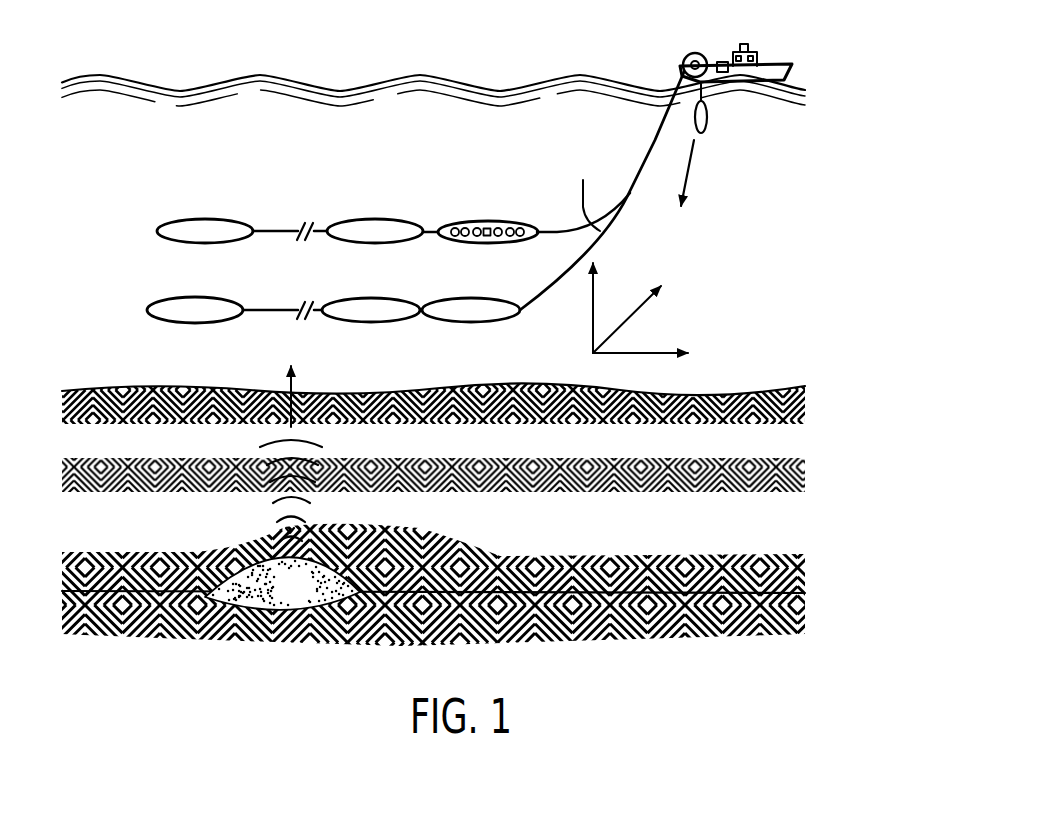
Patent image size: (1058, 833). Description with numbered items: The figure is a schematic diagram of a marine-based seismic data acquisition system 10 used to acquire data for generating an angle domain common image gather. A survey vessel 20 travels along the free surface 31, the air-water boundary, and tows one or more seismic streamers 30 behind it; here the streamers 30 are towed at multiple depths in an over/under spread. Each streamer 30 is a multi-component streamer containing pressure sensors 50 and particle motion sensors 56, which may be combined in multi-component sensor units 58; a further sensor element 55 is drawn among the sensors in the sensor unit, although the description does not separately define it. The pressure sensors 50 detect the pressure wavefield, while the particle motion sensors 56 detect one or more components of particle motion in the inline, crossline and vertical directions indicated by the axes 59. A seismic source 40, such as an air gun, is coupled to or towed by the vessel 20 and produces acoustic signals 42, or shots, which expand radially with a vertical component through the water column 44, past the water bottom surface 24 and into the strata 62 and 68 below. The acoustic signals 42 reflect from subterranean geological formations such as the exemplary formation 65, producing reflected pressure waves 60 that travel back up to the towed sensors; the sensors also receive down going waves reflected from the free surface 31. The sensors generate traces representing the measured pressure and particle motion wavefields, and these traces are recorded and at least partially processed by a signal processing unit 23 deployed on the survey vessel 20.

The marine-based seismic data acquisition system 10 is at (237, 48).
The survey vessel 20 is at (772, 67).
The signal processing unit 23 is at (718, 58).
The water bottom surface 24 is at (750, 388).
The seismic streamer 30 is at (645, 153).
The free surface 31 is at (372, 77).
The seismic source 40 is at (707, 119).
The acoustic signal 42 is at (689, 168).
The water column 44 is at (756, 271).
The pressure sensor 50 is at (477, 228).
The seismic source / sensor 55 is at (487, 228).
The particle motion sensor 56 is at (520, 228).
The multi-component sensor unit 58 is at (170, 222).
The axes 59 is at (577, 354).
The pressure waves 60 is at (262, 507).
The strata 62 is at (516, 568).
The formation 65 is at (308, 598).
The strata 68 is at (683, 624).